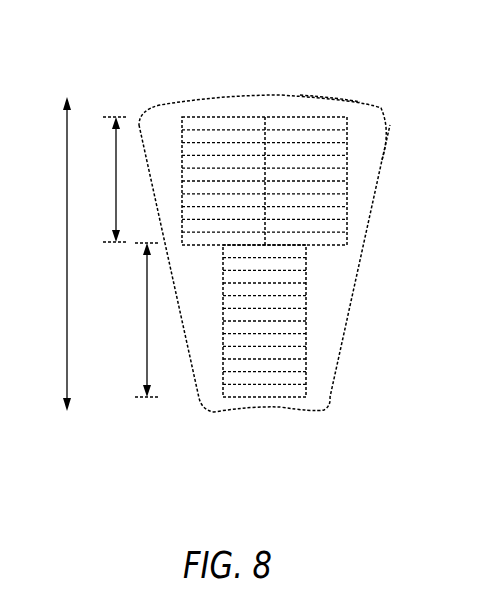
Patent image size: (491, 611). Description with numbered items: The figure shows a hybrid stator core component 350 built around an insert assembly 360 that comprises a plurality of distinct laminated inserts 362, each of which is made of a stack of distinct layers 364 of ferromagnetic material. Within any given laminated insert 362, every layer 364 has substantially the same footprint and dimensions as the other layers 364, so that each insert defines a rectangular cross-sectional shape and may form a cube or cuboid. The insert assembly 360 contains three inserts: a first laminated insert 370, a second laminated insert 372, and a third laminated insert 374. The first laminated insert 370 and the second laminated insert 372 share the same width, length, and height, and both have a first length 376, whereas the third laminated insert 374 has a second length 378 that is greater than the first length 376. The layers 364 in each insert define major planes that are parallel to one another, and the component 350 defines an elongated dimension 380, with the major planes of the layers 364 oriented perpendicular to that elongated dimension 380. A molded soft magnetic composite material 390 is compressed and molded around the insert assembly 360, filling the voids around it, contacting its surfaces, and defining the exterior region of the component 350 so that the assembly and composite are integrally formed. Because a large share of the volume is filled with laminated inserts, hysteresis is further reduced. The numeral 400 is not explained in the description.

The hybrid stator core component 350 is at (165, 57).
The insert assembly 360 is at (355, 175).
The laminated insert 362 is at (283, 115).
The layer 364 is at (347, 207).
The first laminated insert 370 is at (219, 113).
The second laminated insert 372 is at (333, 115).
The third laminated insert 374 is at (223, 355).
The first length 376 is at (116, 182).
The second length 378 is at (147, 330).
The elongated dimension 380 is at (67, 367).
The molded soft magnetic composite material 390 is at (367, 141).
The slot region 400 is at (475, 52).